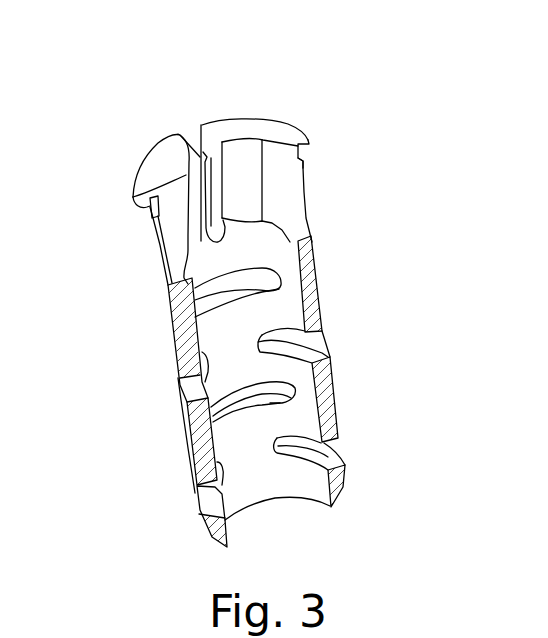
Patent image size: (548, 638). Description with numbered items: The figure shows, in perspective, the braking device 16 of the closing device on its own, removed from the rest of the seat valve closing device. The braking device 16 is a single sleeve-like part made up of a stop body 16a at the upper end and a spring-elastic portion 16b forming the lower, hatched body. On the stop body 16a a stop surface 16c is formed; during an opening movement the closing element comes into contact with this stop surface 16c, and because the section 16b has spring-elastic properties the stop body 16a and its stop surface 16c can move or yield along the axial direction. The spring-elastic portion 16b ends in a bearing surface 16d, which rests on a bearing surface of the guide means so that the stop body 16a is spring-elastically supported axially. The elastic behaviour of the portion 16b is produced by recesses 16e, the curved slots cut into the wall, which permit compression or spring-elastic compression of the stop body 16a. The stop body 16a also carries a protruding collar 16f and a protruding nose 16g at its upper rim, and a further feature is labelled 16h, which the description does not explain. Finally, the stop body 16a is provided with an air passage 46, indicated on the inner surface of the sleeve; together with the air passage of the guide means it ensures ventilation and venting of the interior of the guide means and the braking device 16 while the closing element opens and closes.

The braking device 16 is at (330, 86).
The stop body 16a is at (282, 172).
The spring-elastic portion 16b is at (322, 235).
The stop surface 16c is at (244, 127).
The bearing surface 16d is at (341, 505).
The recesses 16e is at (218, 302).
The protruding collar 16f is at (306, 131).
The protruding nose 16g is at (304, 162).
The left tab 16h is at (203, 193).
The air passage 46 is at (262, 483).